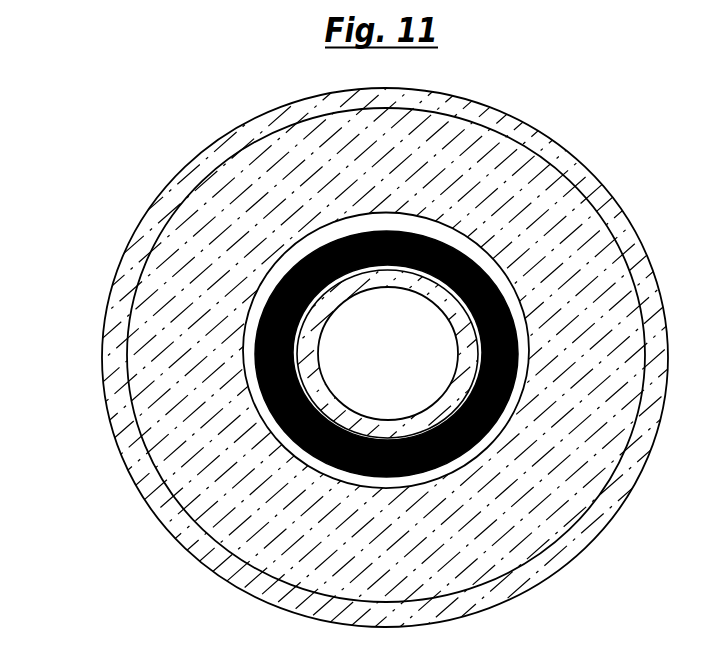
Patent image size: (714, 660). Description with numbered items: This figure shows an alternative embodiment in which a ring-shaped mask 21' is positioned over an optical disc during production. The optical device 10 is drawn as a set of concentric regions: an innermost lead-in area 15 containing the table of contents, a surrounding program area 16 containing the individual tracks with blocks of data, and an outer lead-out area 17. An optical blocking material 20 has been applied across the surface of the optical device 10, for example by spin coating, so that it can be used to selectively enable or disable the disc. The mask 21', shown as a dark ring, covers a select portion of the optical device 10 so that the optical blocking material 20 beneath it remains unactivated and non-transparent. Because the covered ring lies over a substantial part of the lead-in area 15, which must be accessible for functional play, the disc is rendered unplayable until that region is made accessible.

The optical device 10 is at (125, 462).
The lead-in area 15 is at (293, 252).
The program area 16 is at (195, 230).
The lead-out area 17 is at (300, 113).
The optical blocking material 20 is at (138, 357).
The ring-shaped mask 21' is at (357, 352).